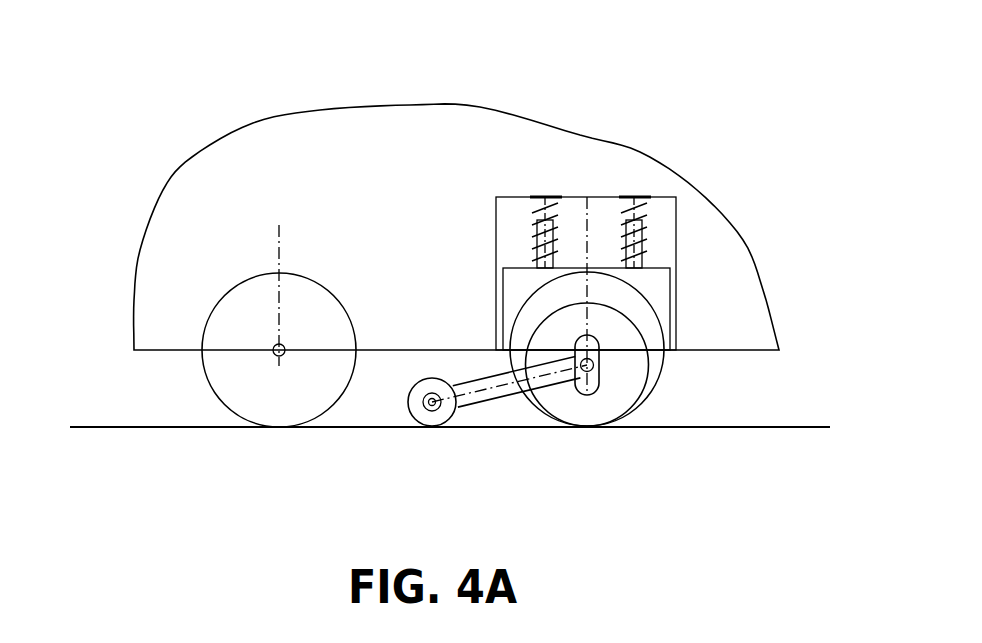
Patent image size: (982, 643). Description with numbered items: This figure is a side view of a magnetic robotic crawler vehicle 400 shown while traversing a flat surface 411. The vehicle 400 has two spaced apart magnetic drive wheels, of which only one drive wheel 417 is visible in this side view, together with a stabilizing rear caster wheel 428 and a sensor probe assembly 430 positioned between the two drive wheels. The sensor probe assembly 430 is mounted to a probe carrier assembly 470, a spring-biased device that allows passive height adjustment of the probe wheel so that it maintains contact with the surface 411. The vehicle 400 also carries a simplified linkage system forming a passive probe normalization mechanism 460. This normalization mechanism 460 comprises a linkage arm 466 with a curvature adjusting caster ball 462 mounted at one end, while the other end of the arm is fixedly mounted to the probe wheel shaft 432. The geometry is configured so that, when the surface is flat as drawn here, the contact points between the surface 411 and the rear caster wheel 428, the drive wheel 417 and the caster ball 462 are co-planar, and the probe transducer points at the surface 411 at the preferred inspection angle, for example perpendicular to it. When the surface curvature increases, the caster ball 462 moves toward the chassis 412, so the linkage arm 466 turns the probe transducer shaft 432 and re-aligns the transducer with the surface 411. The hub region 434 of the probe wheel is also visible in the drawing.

The vehicle 400 is at (212, 82).
The surface 411 is at (113, 425).
The chassis 412 is at (413, 107).
The drive wheel 417 is at (622, 298).
The caster wheel 428 is at (228, 392).
The sensor probe assembly 430 is at (660, 368).
The probe wheel shaft 432 is at (592, 363).
The wheel hub 434 is at (622, 390).
The passive probe normalization mechanism 460 is at (482, 365).
The curvature adjusting caster ball 462 is at (418, 413).
The linkage arm 466 is at (502, 393).
The probe carrier assembly 470 is at (572, 200).